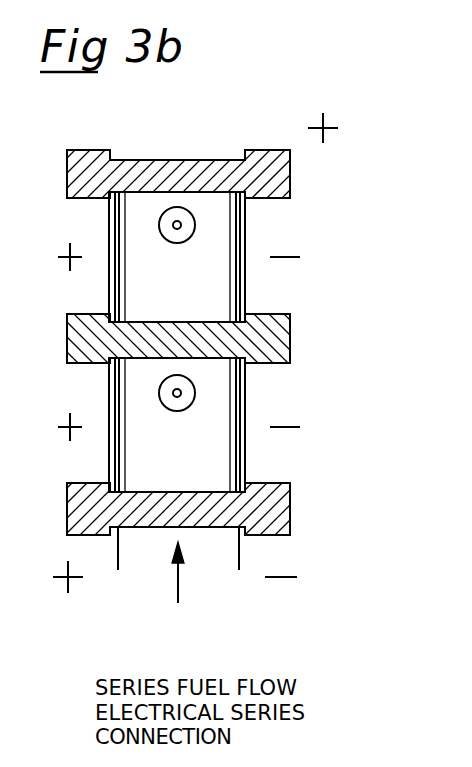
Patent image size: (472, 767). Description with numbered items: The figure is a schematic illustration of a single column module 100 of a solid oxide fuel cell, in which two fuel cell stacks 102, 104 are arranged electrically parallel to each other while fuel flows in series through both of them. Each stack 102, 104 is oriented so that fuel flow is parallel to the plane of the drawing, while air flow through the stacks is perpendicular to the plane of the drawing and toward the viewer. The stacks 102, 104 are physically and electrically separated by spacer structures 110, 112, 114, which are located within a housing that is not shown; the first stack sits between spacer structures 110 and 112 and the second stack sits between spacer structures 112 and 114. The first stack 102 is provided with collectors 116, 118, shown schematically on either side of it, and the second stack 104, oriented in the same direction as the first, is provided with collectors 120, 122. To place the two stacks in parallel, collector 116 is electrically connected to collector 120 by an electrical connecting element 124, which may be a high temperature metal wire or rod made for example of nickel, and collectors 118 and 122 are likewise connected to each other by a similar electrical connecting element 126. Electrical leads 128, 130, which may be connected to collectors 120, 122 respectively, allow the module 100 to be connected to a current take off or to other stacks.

The single column module 100 is at (343, 197).
The fuel cell stack 102 is at (176, 257).
The fuel cell stack 104 is at (176, 425).
The spacer structure 110 is at (78, 172).
The spacer structure 112 is at (75, 350).
The spacer structure 114 is at (80, 510).
The collector 116 is at (240, 296).
The collector 118 is at (115, 291).
The collector 120 is at (240, 465).
The collector 122 is at (115, 462).
The electrical connecting element 124 is at (237, 338).
The electrical connecting element 126 is at (117, 343).
The electrical lead 128 is at (238, 558).
The electrical lead 130 is at (117, 558).